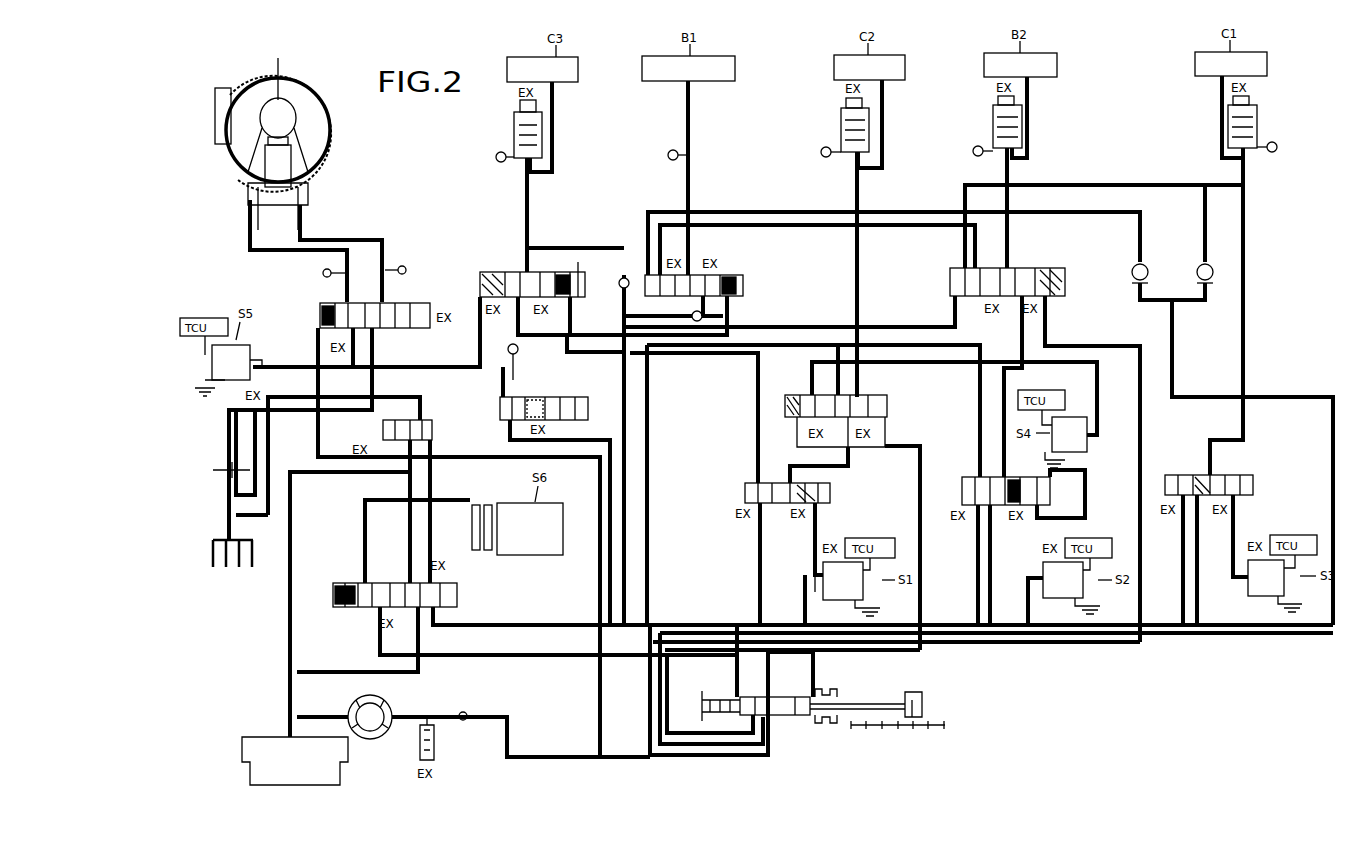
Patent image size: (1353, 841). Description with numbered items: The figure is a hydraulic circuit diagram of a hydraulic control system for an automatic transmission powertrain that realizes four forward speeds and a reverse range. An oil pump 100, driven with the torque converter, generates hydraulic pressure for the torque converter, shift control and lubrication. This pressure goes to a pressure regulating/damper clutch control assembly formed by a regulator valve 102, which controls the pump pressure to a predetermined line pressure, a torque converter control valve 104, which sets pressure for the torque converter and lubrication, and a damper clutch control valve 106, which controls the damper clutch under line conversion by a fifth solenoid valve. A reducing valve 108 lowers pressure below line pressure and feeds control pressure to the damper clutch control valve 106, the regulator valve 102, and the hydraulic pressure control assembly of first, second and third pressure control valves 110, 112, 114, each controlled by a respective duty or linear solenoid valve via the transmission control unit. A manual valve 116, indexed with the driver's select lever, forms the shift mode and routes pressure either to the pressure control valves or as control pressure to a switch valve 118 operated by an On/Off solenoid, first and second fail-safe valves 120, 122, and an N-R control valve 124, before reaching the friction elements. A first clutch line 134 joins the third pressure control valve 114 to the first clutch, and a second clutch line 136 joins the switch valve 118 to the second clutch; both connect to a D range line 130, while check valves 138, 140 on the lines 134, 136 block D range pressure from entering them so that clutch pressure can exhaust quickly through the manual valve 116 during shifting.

The oil pump 100 is at (375, 735).
The regulator valve 102 is at (345, 580).
The torque converter control valve 104 is at (432, 430).
The damper clutch control valve 106 is at (412, 294).
The reducing valve 108 is at (585, 395).
The first pressure control valve 110 is at (745, 488).
The second pressure control valve 112 is at (960, 475).
The third pressure control valve 114 is at (1183, 472).
The manual valve 116 is at (955, 708).
The switch valve 118 is at (889, 406).
The first fail-safe valve 120 is at (750, 280).
The second fail-safe valve 122 is at (1033, 262).
The N-R control valve 124 is at (498, 268).
The D range line 130 is at (1268, 622).
The first clutch line 134 is at (1246, 297).
The second clutch line 136 is at (855, 193).
The check valve 138 is at (1208, 290).
The check valve 140 is at (1132, 290).